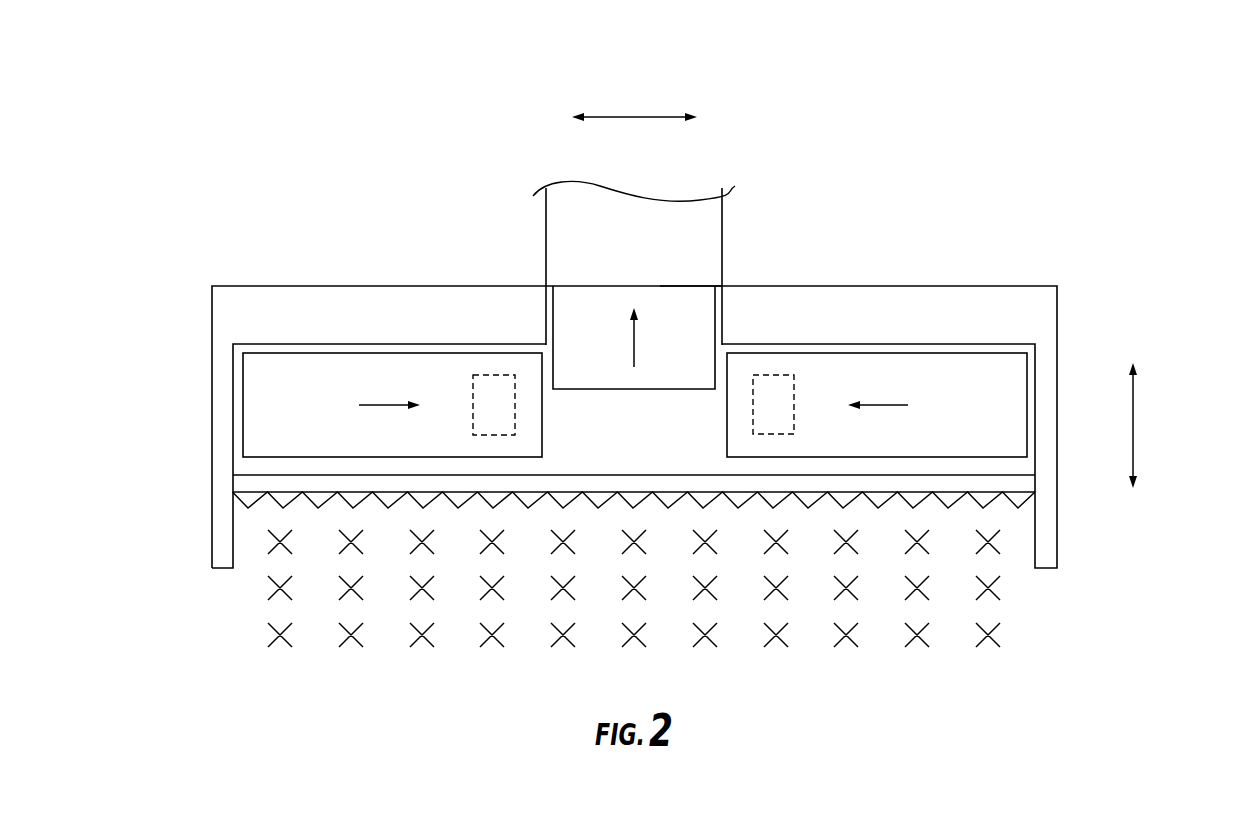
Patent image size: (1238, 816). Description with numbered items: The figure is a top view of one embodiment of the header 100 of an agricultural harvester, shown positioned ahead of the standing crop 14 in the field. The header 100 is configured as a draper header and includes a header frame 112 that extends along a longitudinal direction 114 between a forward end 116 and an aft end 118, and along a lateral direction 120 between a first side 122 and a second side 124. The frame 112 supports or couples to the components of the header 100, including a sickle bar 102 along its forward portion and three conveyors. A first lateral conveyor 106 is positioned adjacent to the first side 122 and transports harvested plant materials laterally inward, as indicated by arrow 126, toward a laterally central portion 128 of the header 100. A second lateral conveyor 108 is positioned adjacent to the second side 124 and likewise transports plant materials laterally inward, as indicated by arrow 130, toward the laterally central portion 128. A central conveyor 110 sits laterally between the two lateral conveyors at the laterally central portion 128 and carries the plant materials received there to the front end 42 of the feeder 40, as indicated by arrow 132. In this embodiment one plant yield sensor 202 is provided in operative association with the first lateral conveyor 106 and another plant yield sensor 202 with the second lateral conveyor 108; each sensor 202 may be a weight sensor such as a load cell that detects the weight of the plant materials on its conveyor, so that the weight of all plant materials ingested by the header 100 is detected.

The standing crop 14 is at (860, 676).
The feeder 40 is at (735, 216).
The front end of the feeder 42 is at (682, 286).
The header 100 is at (177, 93).
The sickle bar 102 is at (642, 495).
The first lateral conveyor 106 is at (833, 377).
The second lateral conveyor 108 is at (297, 377).
The central conveyor 110 is at (578, 333).
The header frame 112 is at (362, 300).
The longitudinal direction 114 is at (1133, 418).
The forward end 116 is at (1040, 605).
The aft end 118 is at (1025, 257).
The lateral direction 120 is at (628, 115).
The first side 122 is at (1110, 315).
The second side 124 is at (168, 448).
The arrow 126 is at (874, 405).
The laterally central portion 128 is at (652, 440).
The arrow 130 is at (392, 405).
The arrow 132 is at (634, 342).
The plant yield sensor 202 is at (496, 375).